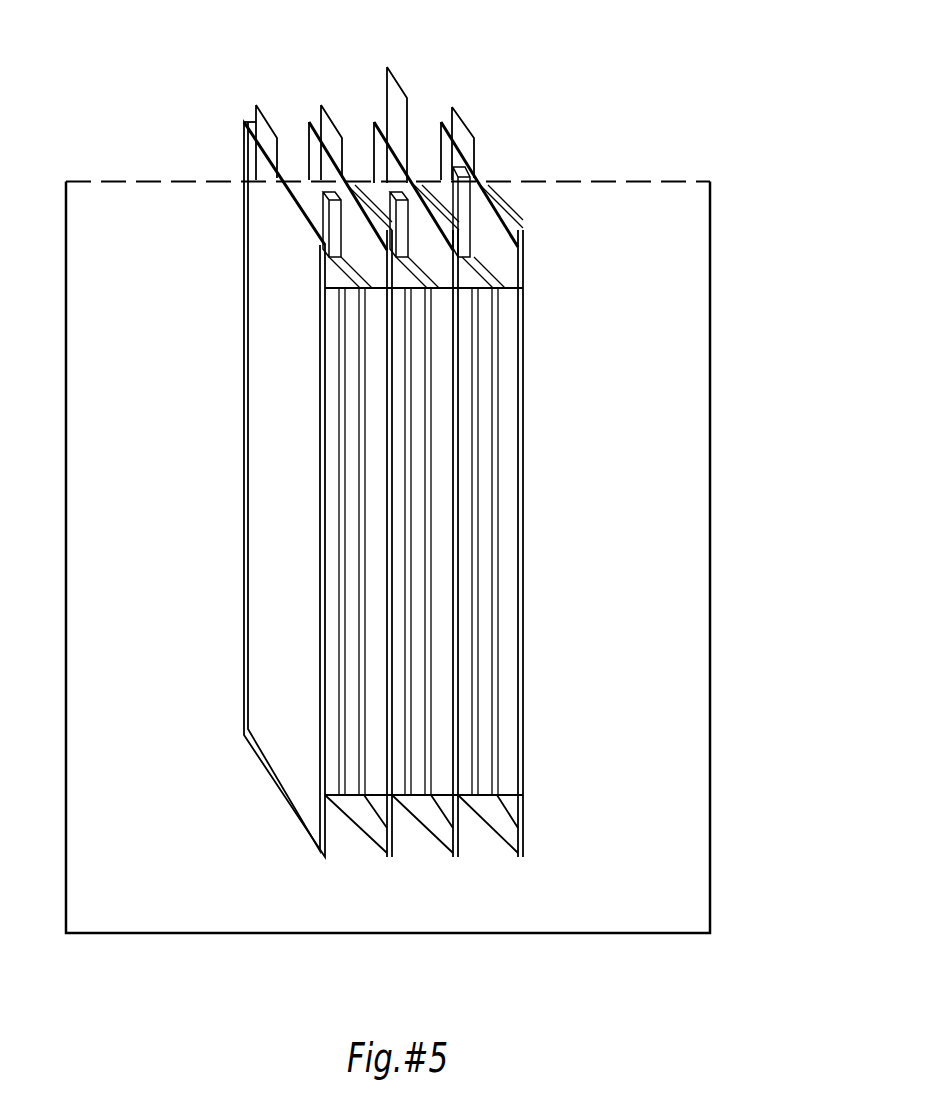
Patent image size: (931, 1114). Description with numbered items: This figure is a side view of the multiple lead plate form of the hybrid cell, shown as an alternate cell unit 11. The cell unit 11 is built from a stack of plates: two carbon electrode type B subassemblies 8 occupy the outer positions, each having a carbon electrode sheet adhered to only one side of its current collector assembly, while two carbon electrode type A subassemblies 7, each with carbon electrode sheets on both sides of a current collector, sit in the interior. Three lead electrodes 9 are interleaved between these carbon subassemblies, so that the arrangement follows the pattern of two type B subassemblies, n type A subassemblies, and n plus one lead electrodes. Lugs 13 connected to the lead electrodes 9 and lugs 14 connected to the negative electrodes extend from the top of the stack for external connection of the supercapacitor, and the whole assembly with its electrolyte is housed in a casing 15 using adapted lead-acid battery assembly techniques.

The carbon electrode type A subassembly 7 is at (330, 162).
The carbon electrode type B subassembly 8 is at (278, 347).
The lead electrode 9 is at (415, 625).
The cell unit 11 is at (522, 855).
The lug 13 is at (467, 172).
The lug 14 is at (398, 82).
The casing 15 is at (710, 325).